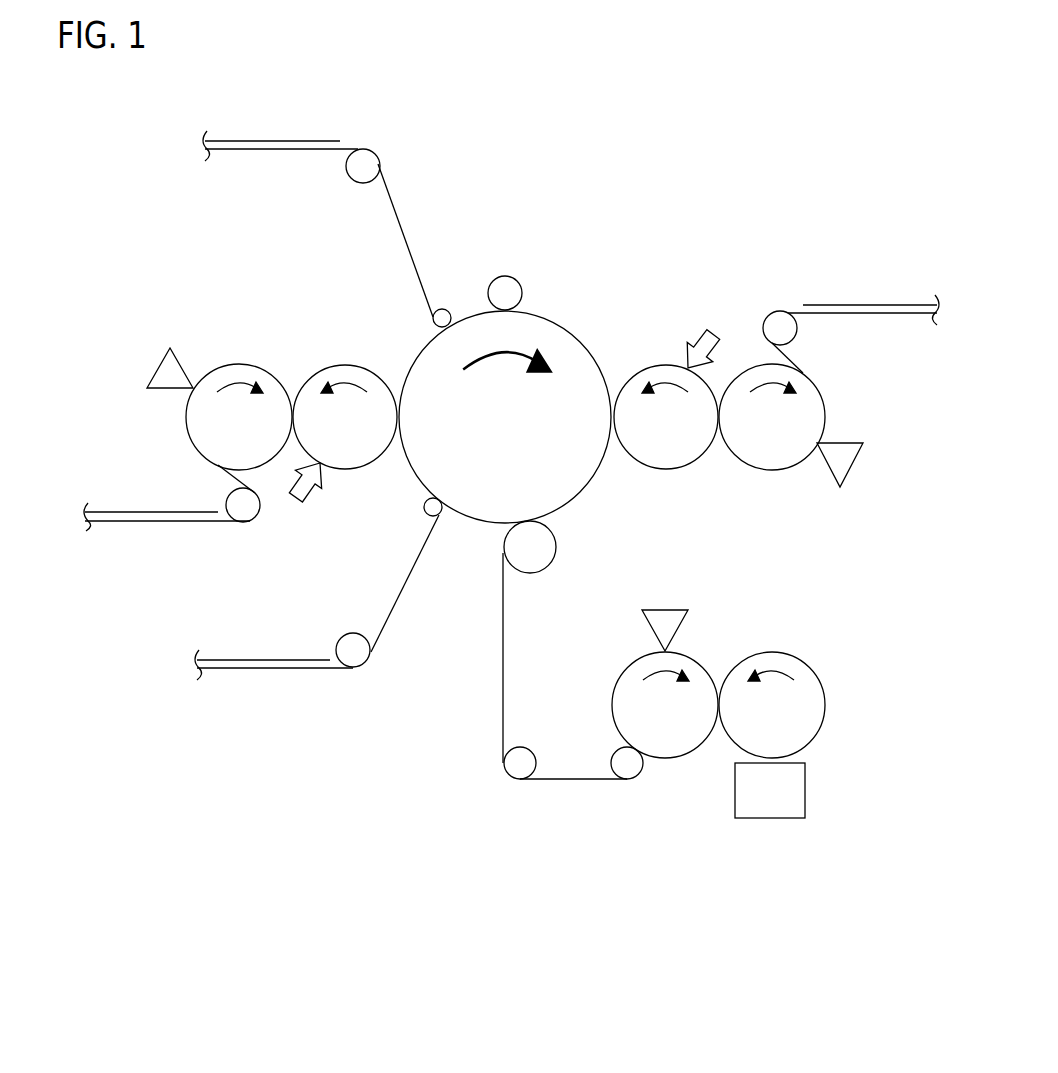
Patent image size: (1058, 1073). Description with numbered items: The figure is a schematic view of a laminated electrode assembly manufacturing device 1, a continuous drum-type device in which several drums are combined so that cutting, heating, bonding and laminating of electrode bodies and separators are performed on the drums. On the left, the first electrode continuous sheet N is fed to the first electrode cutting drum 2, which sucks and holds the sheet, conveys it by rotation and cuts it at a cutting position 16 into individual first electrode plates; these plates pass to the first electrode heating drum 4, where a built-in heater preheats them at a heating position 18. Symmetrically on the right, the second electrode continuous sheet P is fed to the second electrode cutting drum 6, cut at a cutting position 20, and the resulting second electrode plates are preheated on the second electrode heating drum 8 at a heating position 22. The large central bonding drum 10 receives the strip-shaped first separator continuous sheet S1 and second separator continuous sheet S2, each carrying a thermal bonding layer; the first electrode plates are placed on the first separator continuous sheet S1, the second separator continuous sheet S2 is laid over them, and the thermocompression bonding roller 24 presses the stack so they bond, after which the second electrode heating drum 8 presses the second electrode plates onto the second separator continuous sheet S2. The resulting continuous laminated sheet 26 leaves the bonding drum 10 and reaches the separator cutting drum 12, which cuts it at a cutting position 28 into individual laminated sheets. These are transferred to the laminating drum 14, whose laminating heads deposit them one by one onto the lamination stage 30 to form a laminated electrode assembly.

The laminated electrode assembly manufacturing device 1 is at (540, 884).
The first electrode cutting drum 2 is at (237, 365).
The first electrode heating drum 4 is at (345, 365).
The second electrode cutting drum 6 is at (770, 470).
The second electrode heating drum 8 is at (663, 470).
The bonding drum 10 is at (557, 323).
The separator cutting drum 12 is at (630, 667).
The laminating drum 14 is at (770, 652).
The cutting position 16 is at (192, 365).
The heating position 18 is at (335, 482).
The cutting position 20 is at (818, 467).
The heating position 22 is at (672, 350).
The thermocompression bonding roller 24 is at (505, 276).
The continuous laminated sheet 26 is at (503, 655).
The cutting position 28 is at (680, 643).
The lamination stage 30 is at (805, 790).
The first separator continuous sheet S1 is at (240, 660).
The second separator continuous sheet S2 is at (250, 142).
The first electrode continuous sheet N is at (132, 512).
The second electrode continuous sheet P is at (893, 305).